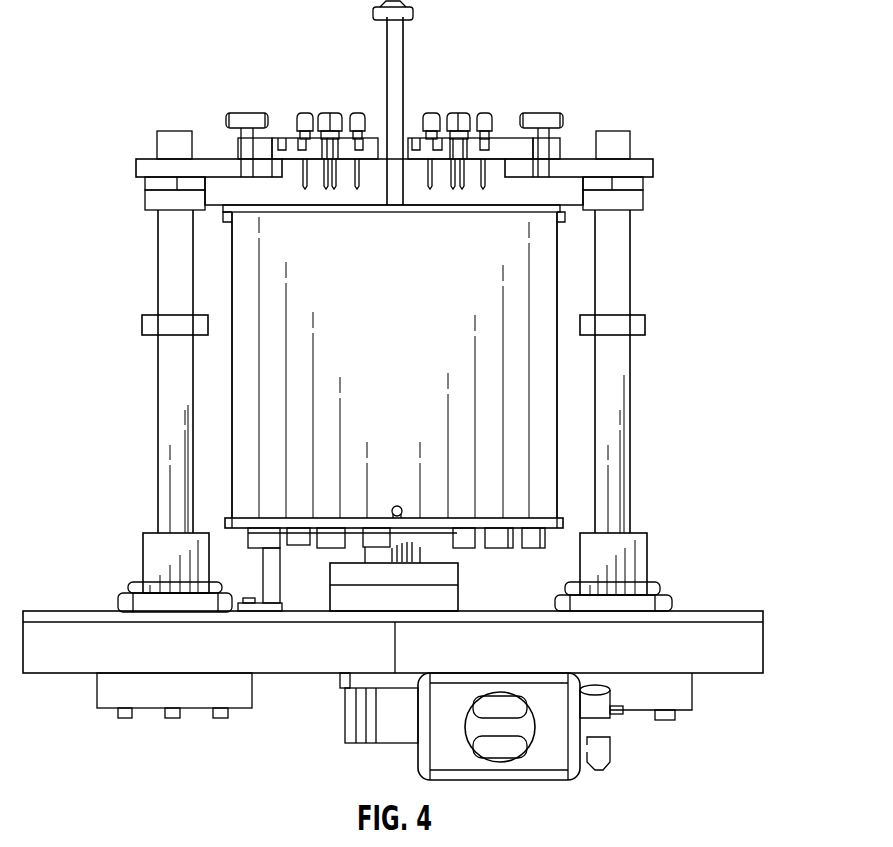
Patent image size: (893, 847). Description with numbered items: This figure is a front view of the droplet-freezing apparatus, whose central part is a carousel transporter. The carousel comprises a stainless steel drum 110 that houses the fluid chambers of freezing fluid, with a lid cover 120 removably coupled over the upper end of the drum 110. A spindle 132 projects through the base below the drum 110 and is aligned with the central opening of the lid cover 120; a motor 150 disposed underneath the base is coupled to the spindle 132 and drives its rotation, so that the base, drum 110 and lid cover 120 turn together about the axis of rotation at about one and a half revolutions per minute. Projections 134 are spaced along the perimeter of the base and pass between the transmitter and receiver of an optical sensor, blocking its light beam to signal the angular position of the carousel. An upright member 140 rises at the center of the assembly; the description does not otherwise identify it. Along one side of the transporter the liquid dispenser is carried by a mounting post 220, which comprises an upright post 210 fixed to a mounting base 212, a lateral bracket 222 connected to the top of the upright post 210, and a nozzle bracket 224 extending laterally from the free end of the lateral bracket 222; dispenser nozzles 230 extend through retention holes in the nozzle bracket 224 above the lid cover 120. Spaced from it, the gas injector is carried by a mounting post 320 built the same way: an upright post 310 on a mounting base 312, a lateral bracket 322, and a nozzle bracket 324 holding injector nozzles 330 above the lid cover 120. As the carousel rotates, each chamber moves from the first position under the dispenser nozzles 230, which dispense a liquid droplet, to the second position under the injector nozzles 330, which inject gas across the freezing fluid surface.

The drum 110 is at (253, 303).
The lid cover 120 is at (565, 217).
The spindle 132 is at (374, 556).
The projections 134 is at (545, 550).
The rod 140 is at (395, 47).
The motor 150 is at (375, 708).
The upright post 210 is at (615, 437).
The mounting base 212 is at (632, 572).
The mounting post 220 is at (583, 110).
The lateral bracket 222 is at (640, 172).
The nozzle bracket 224 is at (503, 152).
The dispenser nozzles 230 is at (480, 105).
The upright post 310 is at (175, 437).
The mounting base 312 is at (157, 568).
The mounting post 320 is at (197, 110).
The lateral bracket 322 is at (137, 164).
The nozzle bracket 324 is at (267, 150).
The injector nozzles 330 is at (358, 105).